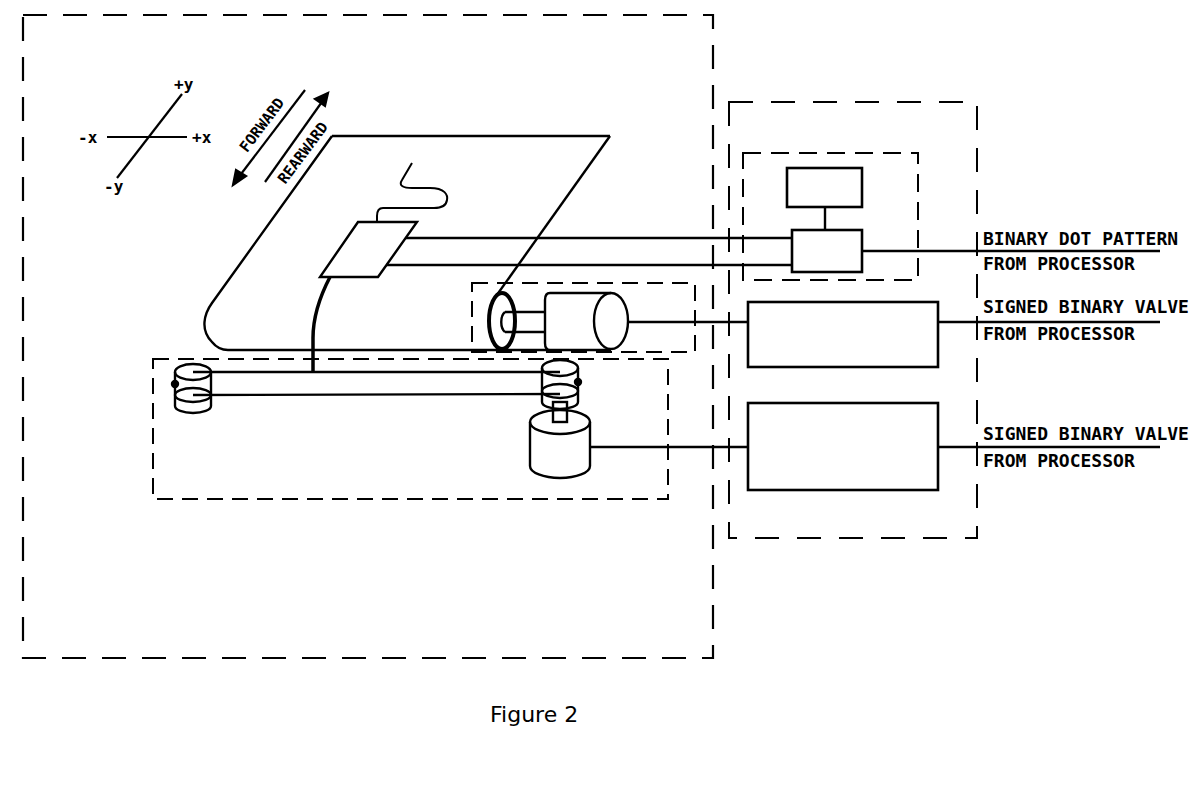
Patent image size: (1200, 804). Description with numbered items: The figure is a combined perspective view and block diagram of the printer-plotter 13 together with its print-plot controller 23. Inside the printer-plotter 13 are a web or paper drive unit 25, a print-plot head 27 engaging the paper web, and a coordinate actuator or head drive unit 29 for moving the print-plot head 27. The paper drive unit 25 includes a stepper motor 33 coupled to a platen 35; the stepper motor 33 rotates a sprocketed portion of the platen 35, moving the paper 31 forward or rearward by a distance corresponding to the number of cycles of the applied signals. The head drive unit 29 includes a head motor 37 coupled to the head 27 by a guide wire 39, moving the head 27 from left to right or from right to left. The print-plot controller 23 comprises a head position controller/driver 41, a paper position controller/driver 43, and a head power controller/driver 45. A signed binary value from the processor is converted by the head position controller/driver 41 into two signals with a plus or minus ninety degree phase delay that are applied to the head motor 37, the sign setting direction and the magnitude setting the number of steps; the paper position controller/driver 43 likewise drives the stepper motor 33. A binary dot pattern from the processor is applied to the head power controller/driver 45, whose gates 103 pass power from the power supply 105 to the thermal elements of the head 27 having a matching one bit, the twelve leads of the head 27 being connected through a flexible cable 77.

The printer-plotter 13 is at (713, 22).
The print-plot controller 23 is at (902, 103).
The paper drive unit 25 is at (693, 347).
The print-plot head 27 is at (381, 277).
The head drive unit 29 is at (290, 499).
The paper 31 is at (253, 247).
The stepper motor 33 is at (637, 349).
The platen 35 is at (487, 339).
The head motor 37 is at (532, 438).
The guide wire 39 is at (372, 395).
The head position controller/driver 41 is at (925, 403).
The paper position controller/driver 43 is at (920, 302).
The head power controller/driver 45 is at (918, 188).
The flexible cable 77 is at (598, 238).
The gates 103 is at (862, 242).
The power supply 105 is at (862, 187).